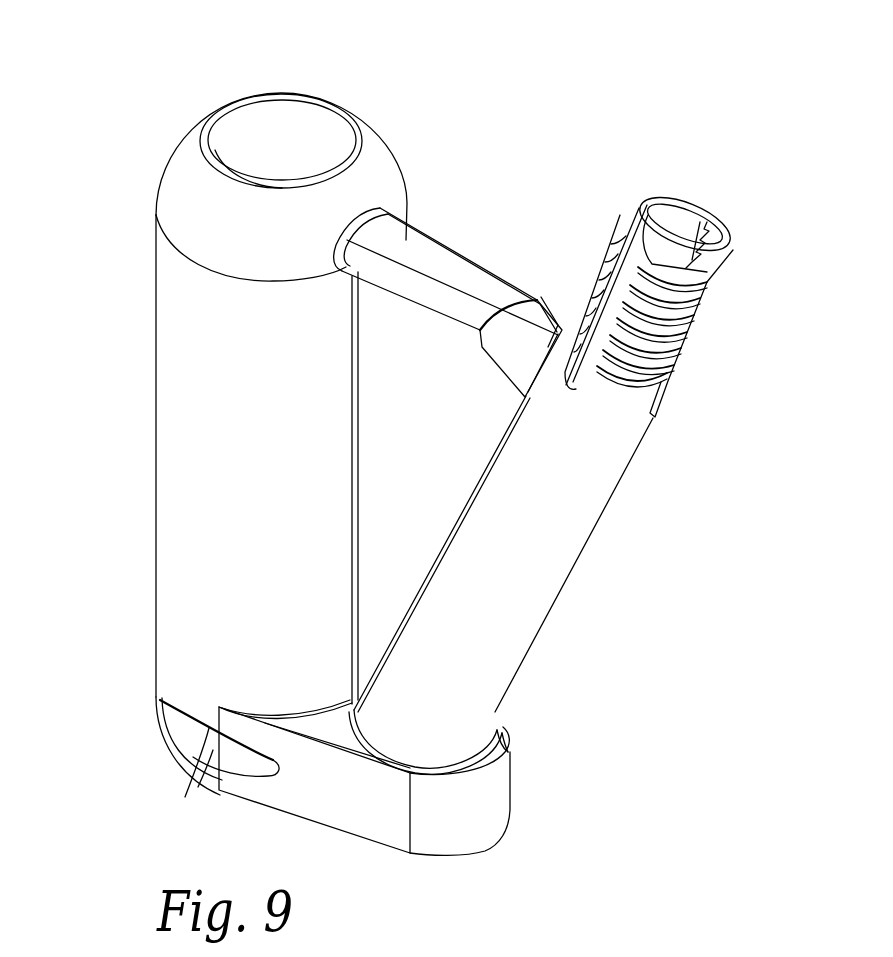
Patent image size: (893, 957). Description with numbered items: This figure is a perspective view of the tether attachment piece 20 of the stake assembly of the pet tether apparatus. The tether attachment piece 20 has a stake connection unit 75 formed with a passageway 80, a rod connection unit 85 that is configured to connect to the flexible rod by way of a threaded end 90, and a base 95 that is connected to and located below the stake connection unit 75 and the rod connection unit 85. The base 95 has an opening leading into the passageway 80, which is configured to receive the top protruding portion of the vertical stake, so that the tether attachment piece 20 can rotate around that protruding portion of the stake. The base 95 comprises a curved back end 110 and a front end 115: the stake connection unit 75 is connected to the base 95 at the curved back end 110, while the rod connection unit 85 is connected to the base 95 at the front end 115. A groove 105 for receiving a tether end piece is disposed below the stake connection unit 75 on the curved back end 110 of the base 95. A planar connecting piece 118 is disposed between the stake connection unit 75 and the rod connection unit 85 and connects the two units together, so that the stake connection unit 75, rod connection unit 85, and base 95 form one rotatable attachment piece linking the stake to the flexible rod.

The tether attachment piece 20 is at (145, 68).
The stake connection unit 75 is at (153, 380).
The passageway 80 is at (300, 122).
The rod connection unit 85 is at (615, 487).
The threaded end 90 is at (735, 255).
The base 95 is at (497, 858).
The groove 105 is at (213, 750).
The curved back end 110 is at (158, 716).
The front end 115 is at (512, 802).
The planar connecting piece 118 is at (422, 365).